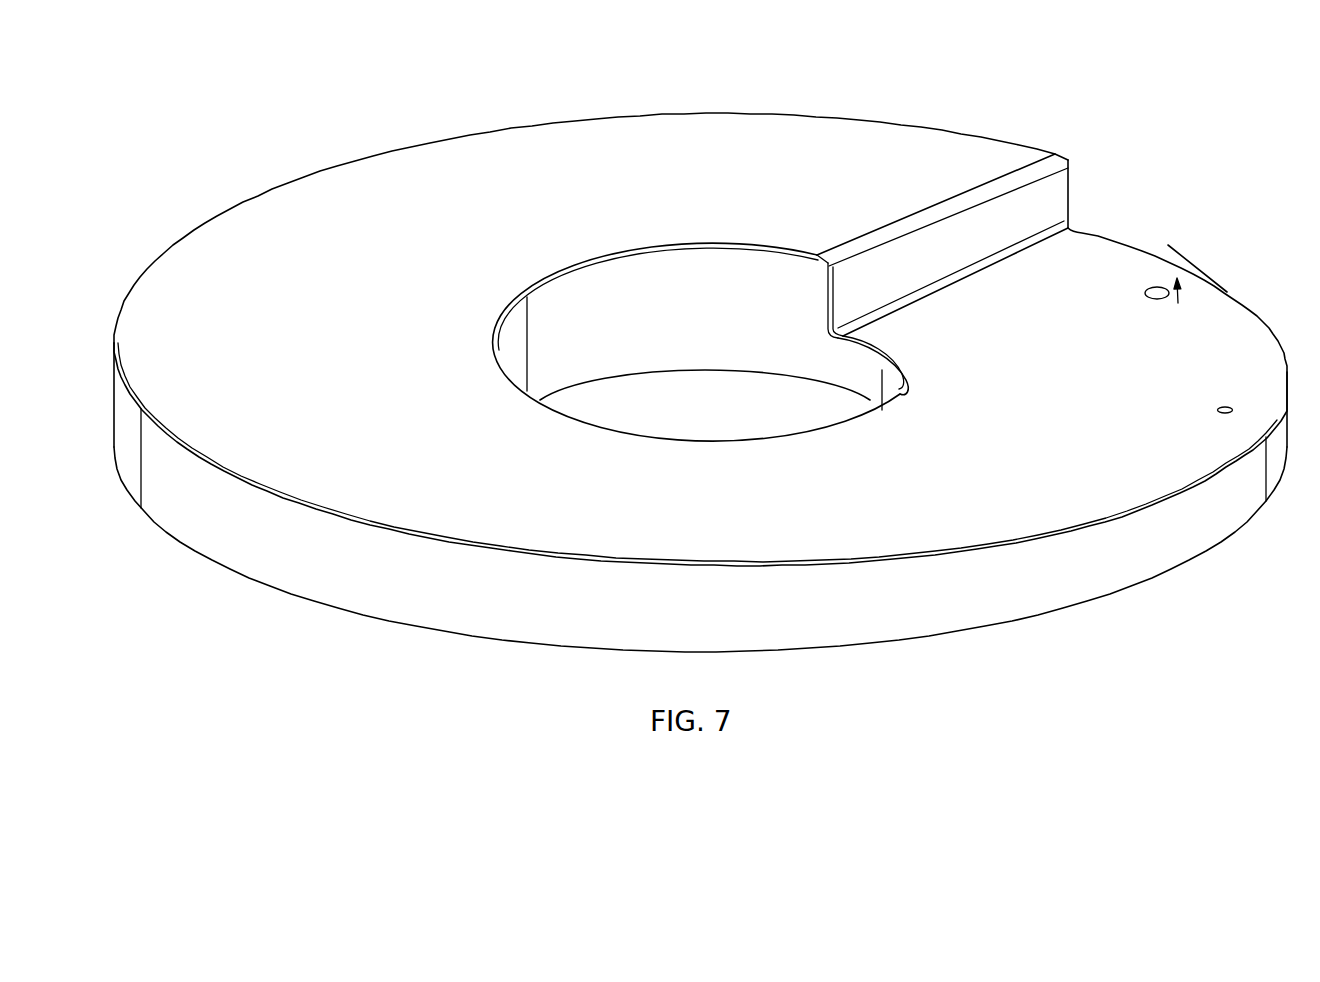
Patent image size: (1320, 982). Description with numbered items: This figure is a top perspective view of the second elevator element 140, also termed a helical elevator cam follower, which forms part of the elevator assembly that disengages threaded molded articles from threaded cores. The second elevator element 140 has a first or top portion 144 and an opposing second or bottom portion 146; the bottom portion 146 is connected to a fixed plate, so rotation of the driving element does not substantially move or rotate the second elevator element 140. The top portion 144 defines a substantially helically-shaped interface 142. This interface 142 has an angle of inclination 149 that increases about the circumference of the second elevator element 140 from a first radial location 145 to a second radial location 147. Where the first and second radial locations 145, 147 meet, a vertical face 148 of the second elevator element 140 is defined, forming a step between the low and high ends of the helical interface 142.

The second elevator element 140 is at (1105, 163).
The helically-shaped interface 142 is at (533, 147).
The first or top portion 144 is at (870, 118).
The first radial location 145 is at (1097, 227).
The second or bottom portion 146 is at (998, 633).
The second radial location 147 is at (1038, 146).
The vertical face 148 is at (1048, 185).
The angle of inclination 149 is at (1187, 253).